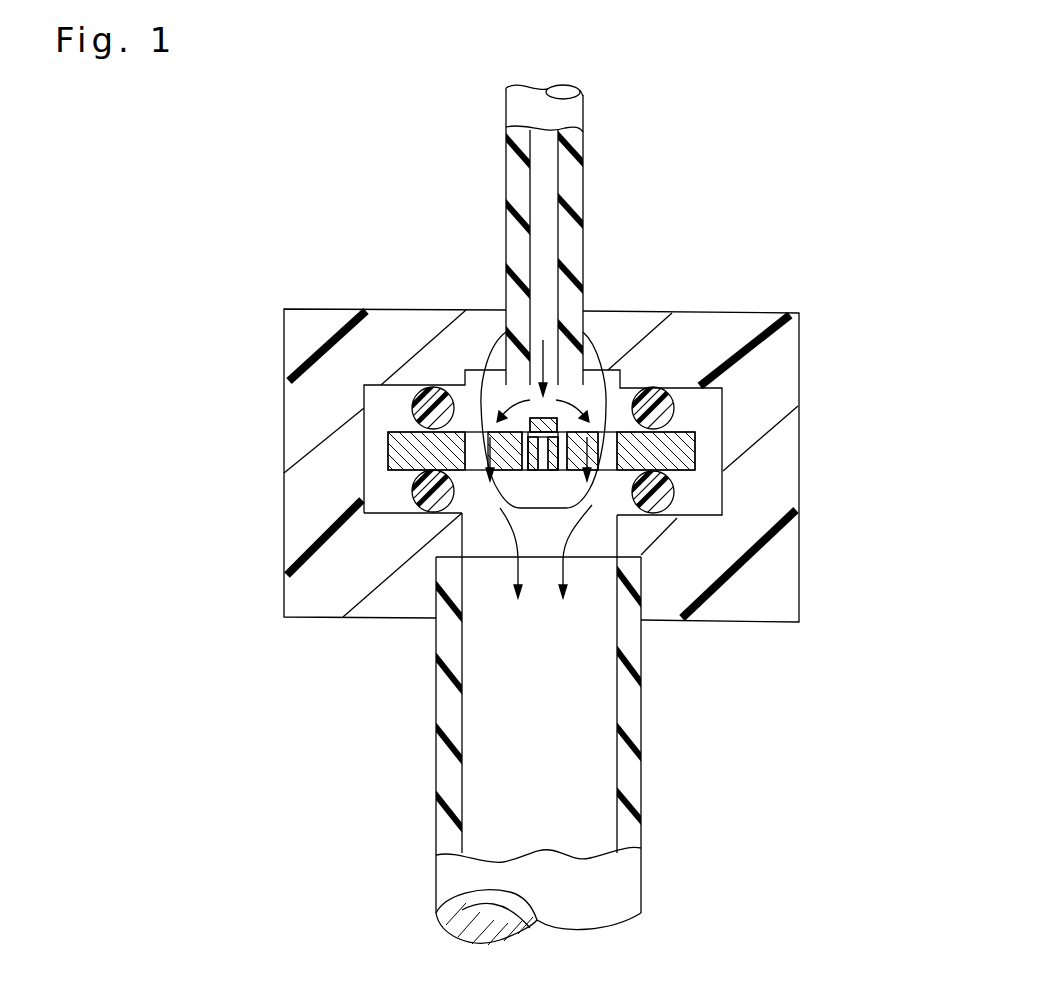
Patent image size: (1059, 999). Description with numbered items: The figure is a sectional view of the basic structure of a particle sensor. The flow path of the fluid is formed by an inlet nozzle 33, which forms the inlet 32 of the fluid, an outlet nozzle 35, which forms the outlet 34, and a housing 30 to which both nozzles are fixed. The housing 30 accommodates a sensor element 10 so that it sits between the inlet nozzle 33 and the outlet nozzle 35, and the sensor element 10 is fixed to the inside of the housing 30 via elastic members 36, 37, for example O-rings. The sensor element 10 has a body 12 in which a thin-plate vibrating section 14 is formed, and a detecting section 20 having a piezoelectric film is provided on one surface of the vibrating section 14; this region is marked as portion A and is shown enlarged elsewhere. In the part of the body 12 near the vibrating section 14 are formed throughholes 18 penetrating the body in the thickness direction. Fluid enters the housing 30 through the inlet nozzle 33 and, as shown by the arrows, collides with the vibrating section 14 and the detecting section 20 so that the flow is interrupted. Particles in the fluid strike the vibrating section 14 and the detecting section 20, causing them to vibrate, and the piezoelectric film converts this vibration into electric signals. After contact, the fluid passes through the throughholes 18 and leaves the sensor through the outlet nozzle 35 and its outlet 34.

The sensor element 10 is at (714, 426).
The body 12 is at (690, 453).
The vibrating section 14 is at (542, 437).
The throughholes 18 is at (562, 428).
The detecting section 20 is at (553, 427).
The housing 30 is at (310, 583).
The inlet 32 is at (557, 212).
The inlet nozzle 33 is at (570, 168).
The outlet 34 is at (616, 720).
The outlet nozzle 35 is at (630, 838).
The elastic member 36 is at (412, 407).
The elastic member 37 is at (412, 490).
The portion A is at (490, 345).